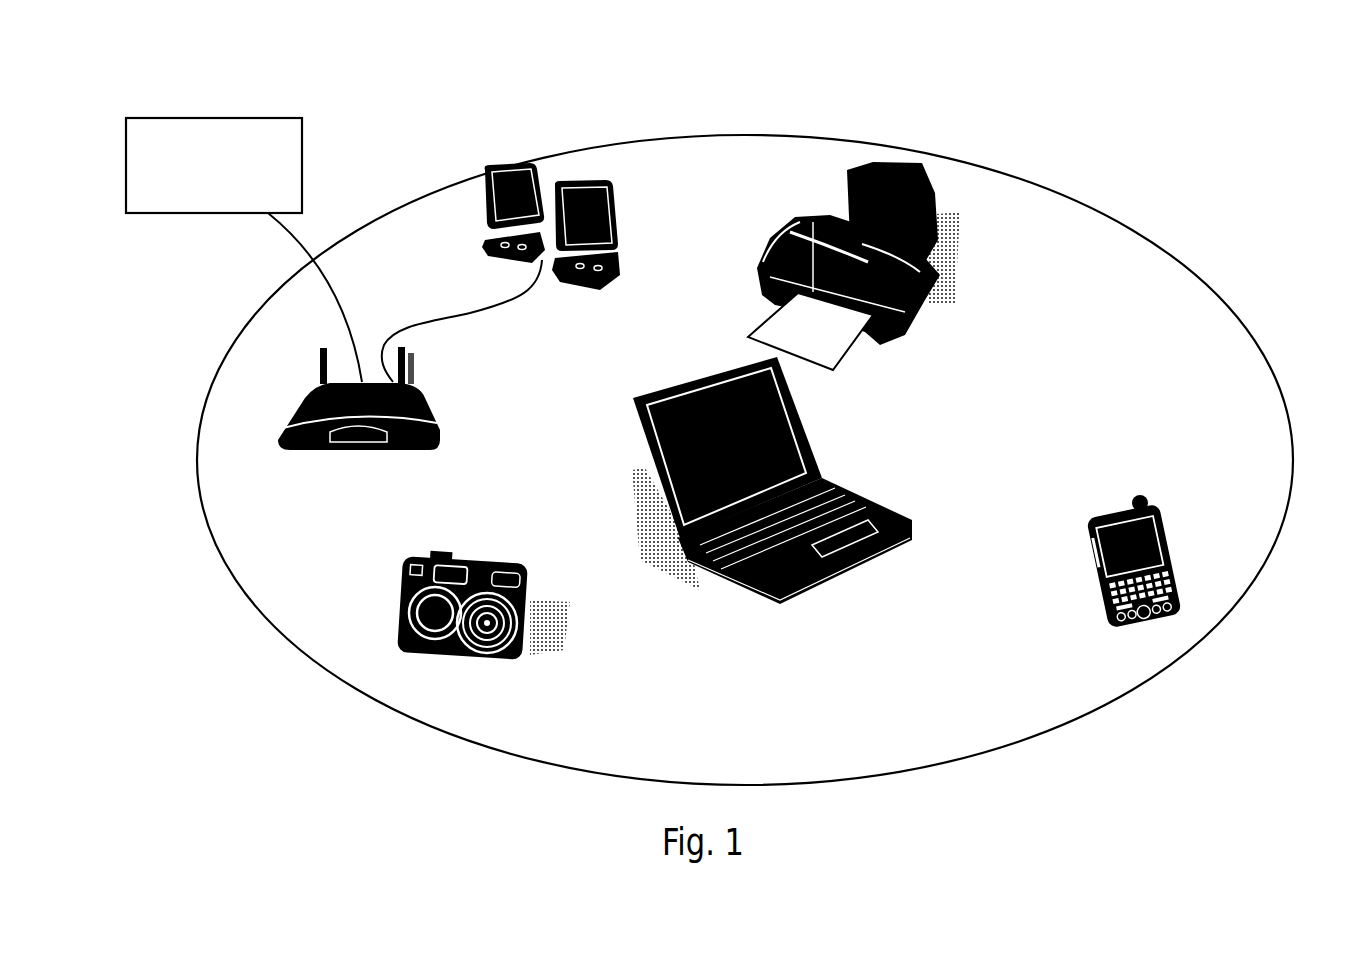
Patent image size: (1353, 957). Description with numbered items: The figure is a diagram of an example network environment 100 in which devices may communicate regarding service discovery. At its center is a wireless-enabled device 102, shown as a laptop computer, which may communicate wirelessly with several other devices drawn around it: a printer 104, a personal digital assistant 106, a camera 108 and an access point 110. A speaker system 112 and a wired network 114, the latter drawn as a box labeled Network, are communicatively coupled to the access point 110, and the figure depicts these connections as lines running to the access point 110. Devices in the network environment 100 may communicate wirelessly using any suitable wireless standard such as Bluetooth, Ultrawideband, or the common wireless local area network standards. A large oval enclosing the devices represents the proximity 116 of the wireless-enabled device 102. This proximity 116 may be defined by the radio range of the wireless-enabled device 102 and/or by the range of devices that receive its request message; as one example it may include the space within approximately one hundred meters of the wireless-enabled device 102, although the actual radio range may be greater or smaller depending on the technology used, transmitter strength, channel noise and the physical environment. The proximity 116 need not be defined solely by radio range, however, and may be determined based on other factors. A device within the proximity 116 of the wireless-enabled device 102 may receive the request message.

The network environment 100 is at (1012, 75).
The wireless-enabled device 102 is at (853, 497).
The printer 104 is at (937, 270).
The personal digital assistant (PDA) 106 is at (1148, 500).
The camera 108 is at (503, 557).
The access point 110 is at (440, 402).
The speaker system 112 is at (612, 196).
The wired network 114 is at (185, 118).
The proximity 116 is at (1055, 194).